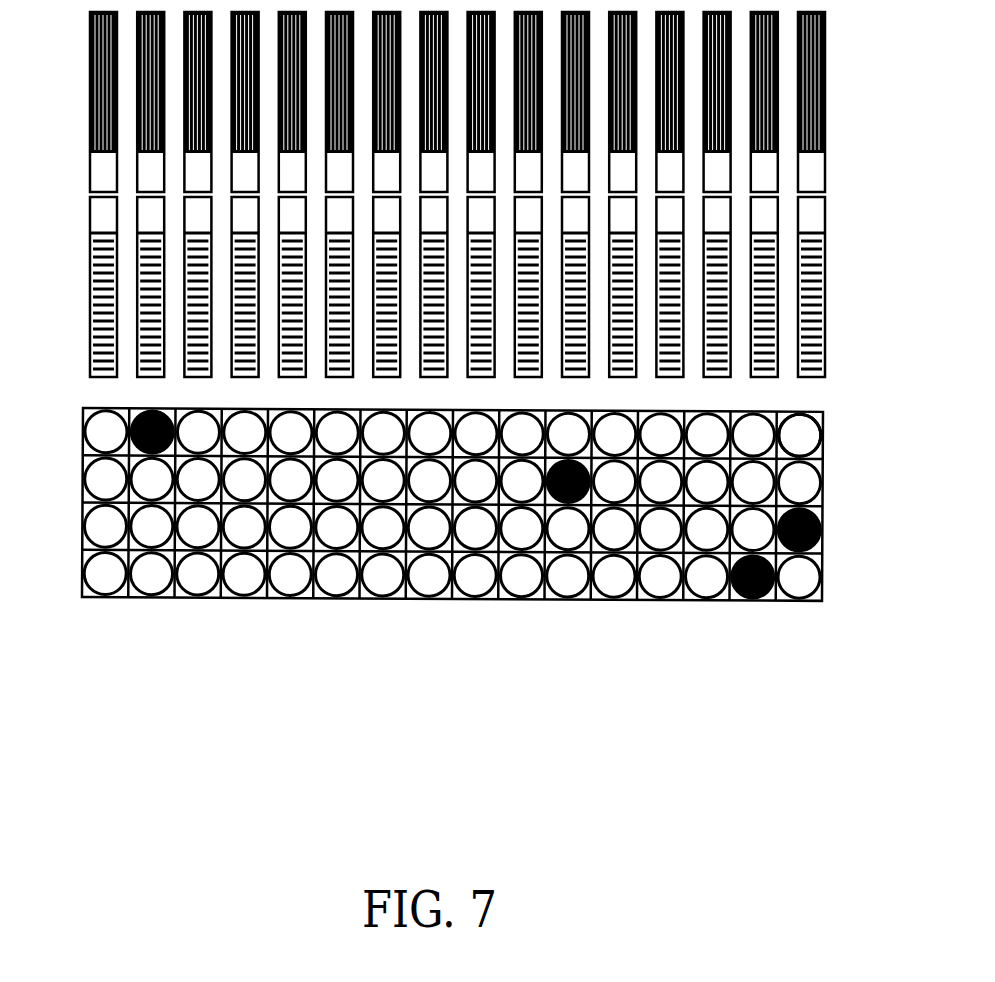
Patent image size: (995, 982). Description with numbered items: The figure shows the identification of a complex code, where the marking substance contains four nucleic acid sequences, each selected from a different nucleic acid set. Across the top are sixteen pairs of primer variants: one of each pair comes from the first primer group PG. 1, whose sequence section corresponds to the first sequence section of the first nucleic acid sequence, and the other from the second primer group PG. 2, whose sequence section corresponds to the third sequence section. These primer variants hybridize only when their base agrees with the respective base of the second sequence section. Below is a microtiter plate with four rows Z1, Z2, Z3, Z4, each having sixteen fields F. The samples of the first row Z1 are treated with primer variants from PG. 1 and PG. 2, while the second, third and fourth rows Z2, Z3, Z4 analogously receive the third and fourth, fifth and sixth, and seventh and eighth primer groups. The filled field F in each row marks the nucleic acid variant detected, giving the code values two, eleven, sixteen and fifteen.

The first primer group PG. 1 is at (498, 102).
The second primer group PG. 2 is at (499, 287).
The first row of the microtiter plate Z1 is at (426, 434).
The second row of the microtiter plate Z2 is at (426, 481).
The third row of the microtiter plate Z3 is at (425, 528).
The fourth row of the microtiter plate Z4 is at (425, 575).
The field F is at (792, 437).